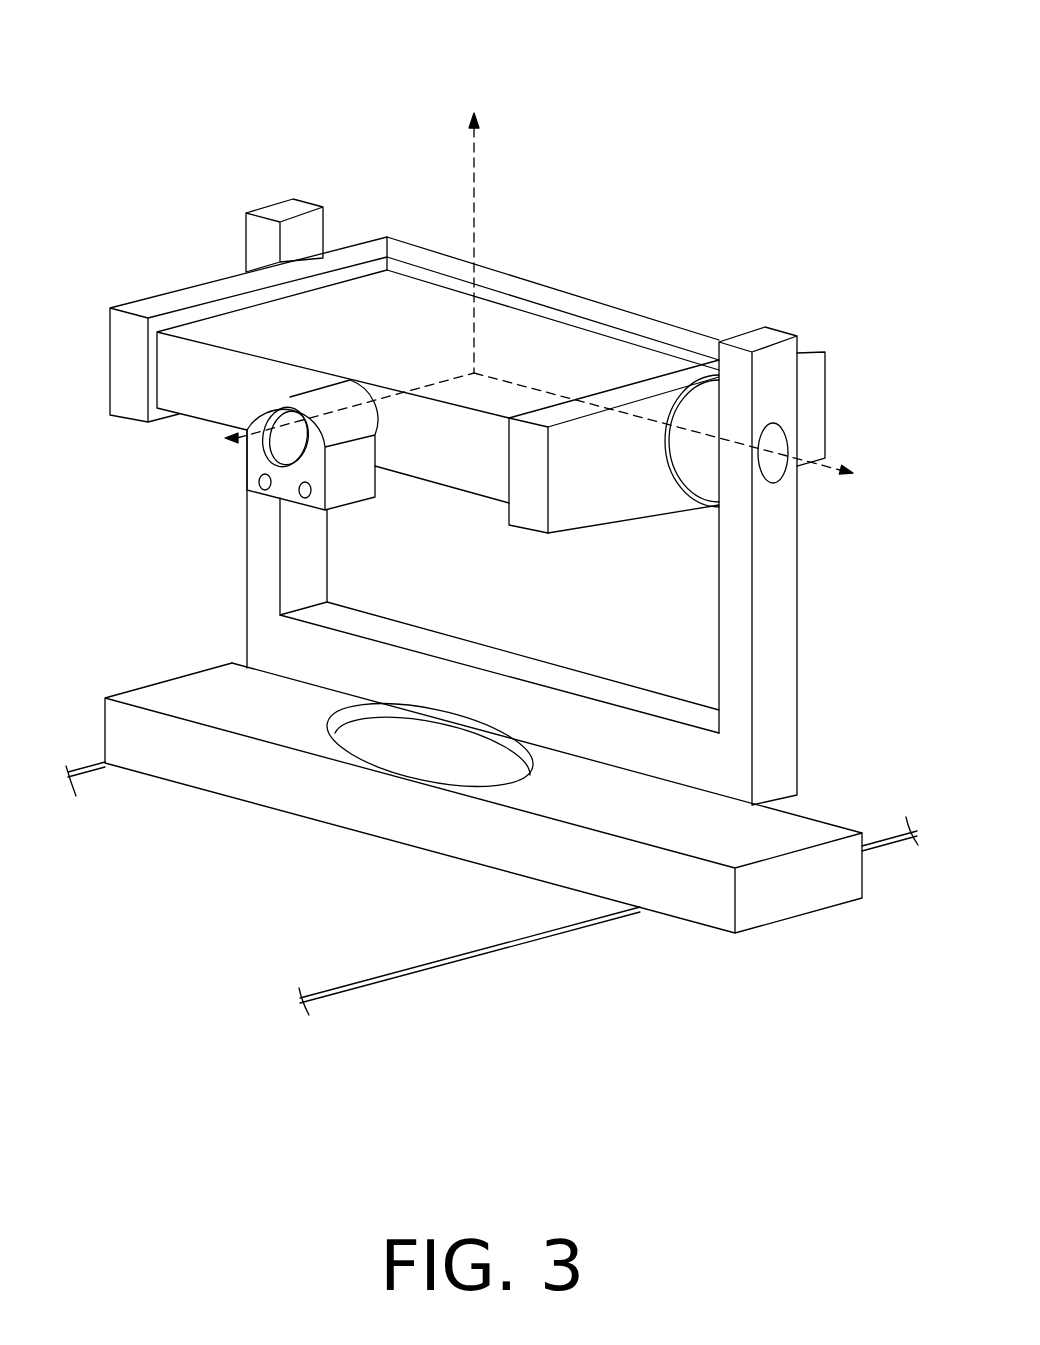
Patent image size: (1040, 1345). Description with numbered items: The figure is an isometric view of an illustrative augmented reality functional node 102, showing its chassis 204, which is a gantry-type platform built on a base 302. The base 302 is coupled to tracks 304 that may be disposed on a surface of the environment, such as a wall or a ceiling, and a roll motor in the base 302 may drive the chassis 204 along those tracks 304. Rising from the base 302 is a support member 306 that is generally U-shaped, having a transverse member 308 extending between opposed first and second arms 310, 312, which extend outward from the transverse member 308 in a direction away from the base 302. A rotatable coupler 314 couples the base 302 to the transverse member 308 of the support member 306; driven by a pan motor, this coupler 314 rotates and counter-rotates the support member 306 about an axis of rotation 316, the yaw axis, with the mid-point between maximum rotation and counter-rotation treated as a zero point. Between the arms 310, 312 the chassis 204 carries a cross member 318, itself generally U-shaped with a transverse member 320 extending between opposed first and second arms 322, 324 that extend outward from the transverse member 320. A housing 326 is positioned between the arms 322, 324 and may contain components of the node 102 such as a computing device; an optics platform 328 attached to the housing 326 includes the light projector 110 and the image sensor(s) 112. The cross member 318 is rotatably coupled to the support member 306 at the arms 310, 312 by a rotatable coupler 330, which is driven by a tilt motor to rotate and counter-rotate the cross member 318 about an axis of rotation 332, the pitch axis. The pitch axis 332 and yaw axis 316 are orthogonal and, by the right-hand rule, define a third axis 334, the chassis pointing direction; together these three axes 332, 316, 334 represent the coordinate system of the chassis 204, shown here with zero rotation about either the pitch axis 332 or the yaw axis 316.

The augmented reality functional node 102 is at (262, 131).
The chassis 204 is at (633, 240).
The light projector 110 is at (307, 452).
The image sensor 112 is at (258, 490).
The base 302 is at (755, 906).
The tracks 304 is at (90, 783).
The support member 306 is at (532, 725).
The transverse member 308 is at (352, 662).
The first arm 310 is at (783, 737).
The second arm 312 is at (260, 600).
The rotatable coupler 314 is at (413, 750).
The axis of rotation (Y_C / Yaw axis) 316 is at (478, 165).
The cross member 318 is at (521, 520).
The transverse member 320 is at (620, 308).
The first arm 322 is at (587, 482).
The second arm 324 is at (195, 298).
The housing 326 is at (347, 312).
The optics platform 328 is at (357, 463).
The rotatable coupler 330 is at (704, 482).
The axis of rotation (X_C / Pitch axis) 332 is at (823, 470).
The Z_C-axis (chassis pointing direction) 334 is at (277, 427).